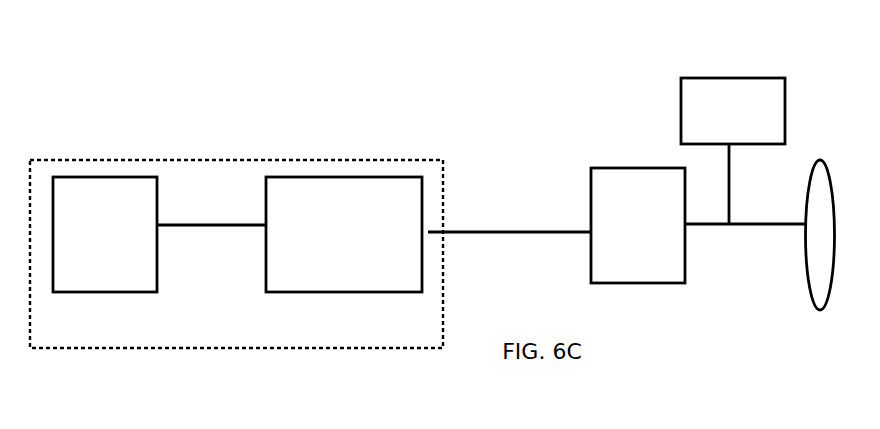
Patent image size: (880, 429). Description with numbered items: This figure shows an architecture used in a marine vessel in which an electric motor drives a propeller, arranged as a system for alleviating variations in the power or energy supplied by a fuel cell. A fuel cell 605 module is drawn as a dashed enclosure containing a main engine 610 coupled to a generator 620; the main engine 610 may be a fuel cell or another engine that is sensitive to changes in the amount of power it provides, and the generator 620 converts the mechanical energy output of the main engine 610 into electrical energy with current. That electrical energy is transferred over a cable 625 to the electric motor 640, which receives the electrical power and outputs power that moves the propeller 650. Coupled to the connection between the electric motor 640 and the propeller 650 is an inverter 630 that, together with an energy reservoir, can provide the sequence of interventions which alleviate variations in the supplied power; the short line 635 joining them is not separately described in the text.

The fuel cell module 605 is at (236, 283).
The main engine 610 is at (159, 204).
The generator 620 is at (344, 200).
The cable 625 is at (509, 257).
The inverter 630 is at (733, 91).
The connection line 635 is at (745, 206).
The electric motor 640 is at (638, 202).
The propeller 650 is at (824, 215).